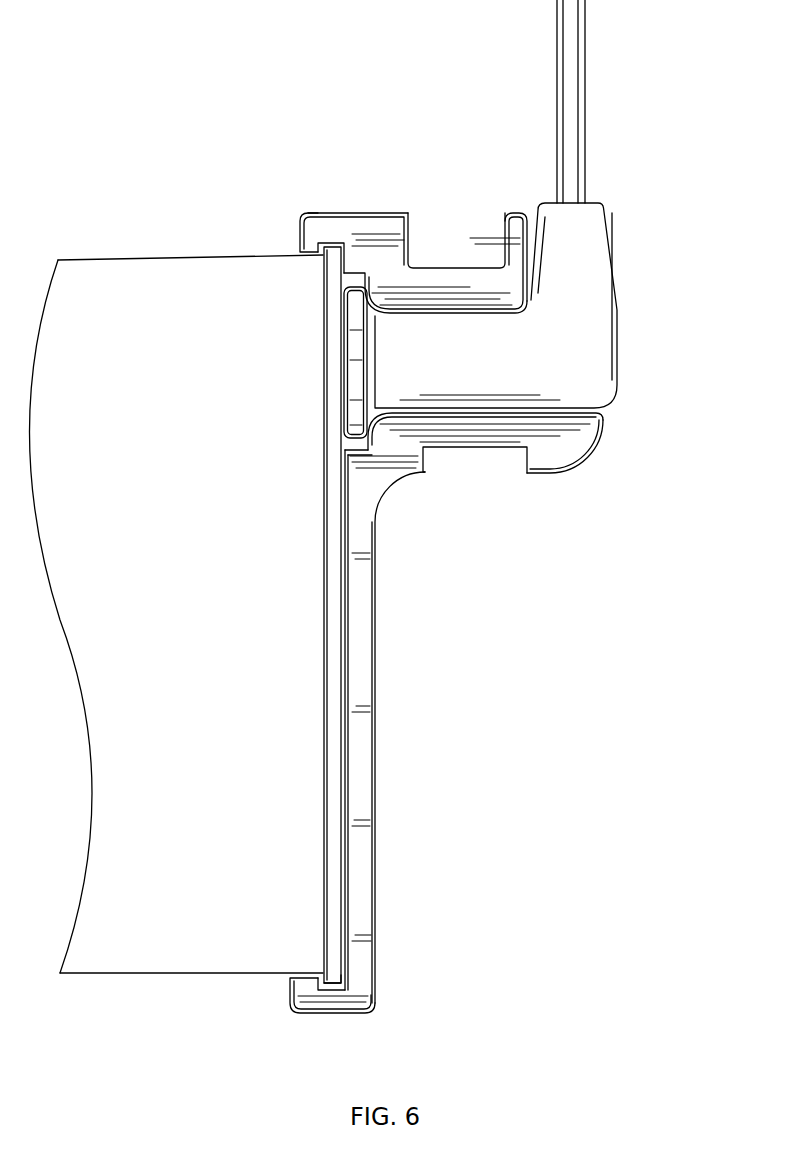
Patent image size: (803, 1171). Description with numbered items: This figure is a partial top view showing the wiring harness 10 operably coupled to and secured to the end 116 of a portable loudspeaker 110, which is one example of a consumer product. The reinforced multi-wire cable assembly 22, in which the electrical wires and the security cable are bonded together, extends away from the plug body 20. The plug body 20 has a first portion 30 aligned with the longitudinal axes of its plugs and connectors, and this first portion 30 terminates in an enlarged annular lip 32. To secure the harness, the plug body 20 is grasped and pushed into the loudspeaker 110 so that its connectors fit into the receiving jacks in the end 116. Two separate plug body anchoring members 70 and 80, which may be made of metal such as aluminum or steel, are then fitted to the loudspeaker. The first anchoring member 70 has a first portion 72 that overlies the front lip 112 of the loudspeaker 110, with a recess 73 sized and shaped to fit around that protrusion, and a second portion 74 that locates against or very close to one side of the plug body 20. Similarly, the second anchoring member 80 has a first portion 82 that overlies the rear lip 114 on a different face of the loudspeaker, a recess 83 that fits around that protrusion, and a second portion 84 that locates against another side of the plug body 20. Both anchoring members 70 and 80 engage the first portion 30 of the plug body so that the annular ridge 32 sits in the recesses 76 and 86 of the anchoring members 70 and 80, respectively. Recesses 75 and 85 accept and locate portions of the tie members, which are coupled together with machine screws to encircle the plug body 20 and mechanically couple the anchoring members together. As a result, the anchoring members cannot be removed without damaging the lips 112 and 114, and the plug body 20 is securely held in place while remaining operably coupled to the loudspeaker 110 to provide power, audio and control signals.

The wiring harness 10 is at (652, 214).
The plug body 20 is at (634, 425).
The reinforced multi-wire cable assembly 22 is at (609, 56).
The first portion 30 is at (520, 410).
The annular lip 32 is at (348, 355).
The plug body anchoring member 70 is at (390, 792).
The first portion 72 is at (302, 1003).
The recess 73 is at (347, 988).
The second portion 74 is at (547, 465).
The recess 75 is at (433, 453).
The recess 76 is at (345, 442).
The second plug body anchoring member 80 is at (383, 185).
The first portion 82 is at (303, 245).
The recess 83 is at (335, 243).
The second portion 84 is at (513, 220).
The recess 85 is at (468, 257).
The recess 86 is at (347, 282).
The portable loudspeaker 110 is at (123, 828).
The front lip 112 is at (337, 978).
The rear lip 114 is at (330, 255).
The end 116 is at (325, 818).